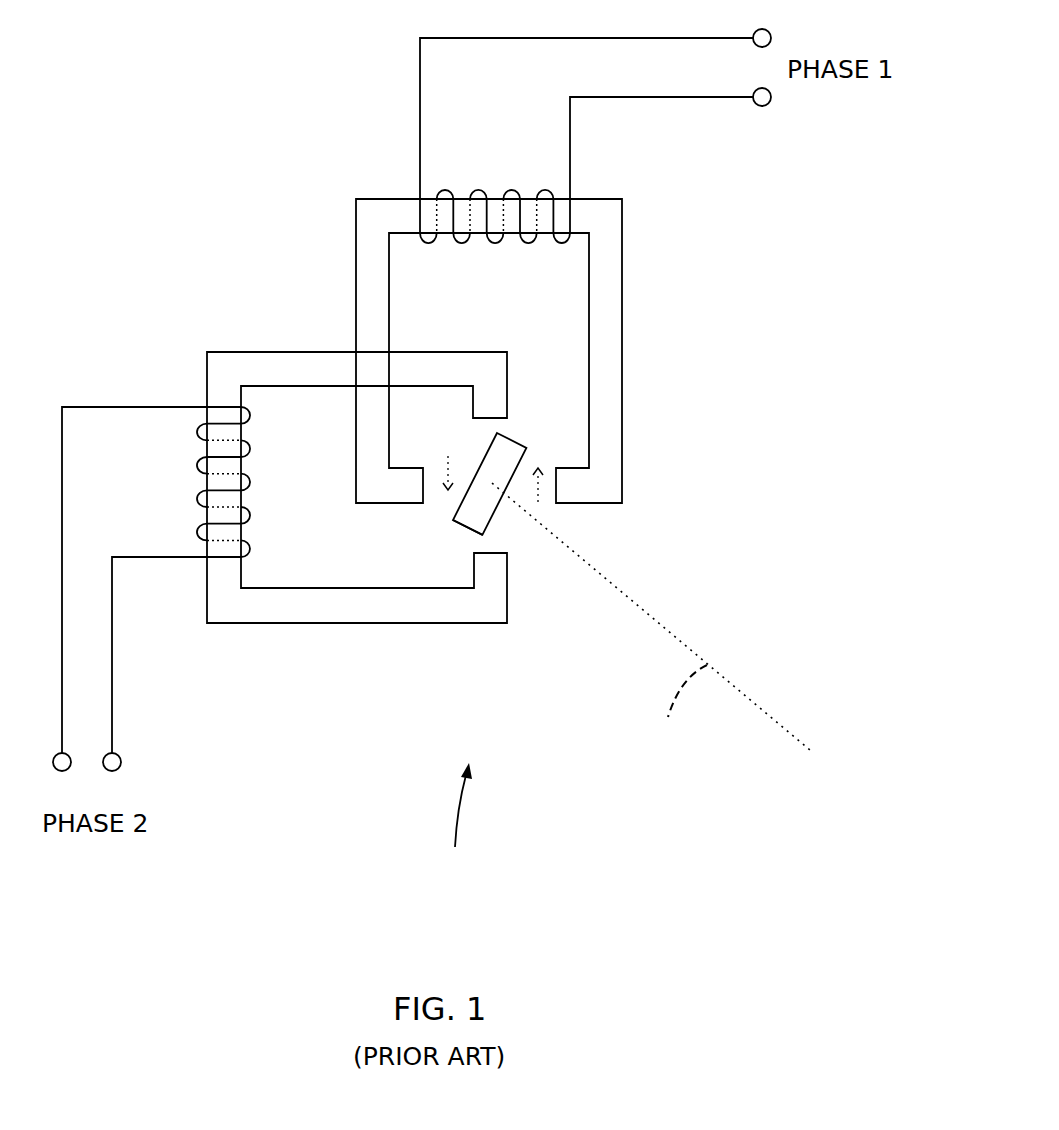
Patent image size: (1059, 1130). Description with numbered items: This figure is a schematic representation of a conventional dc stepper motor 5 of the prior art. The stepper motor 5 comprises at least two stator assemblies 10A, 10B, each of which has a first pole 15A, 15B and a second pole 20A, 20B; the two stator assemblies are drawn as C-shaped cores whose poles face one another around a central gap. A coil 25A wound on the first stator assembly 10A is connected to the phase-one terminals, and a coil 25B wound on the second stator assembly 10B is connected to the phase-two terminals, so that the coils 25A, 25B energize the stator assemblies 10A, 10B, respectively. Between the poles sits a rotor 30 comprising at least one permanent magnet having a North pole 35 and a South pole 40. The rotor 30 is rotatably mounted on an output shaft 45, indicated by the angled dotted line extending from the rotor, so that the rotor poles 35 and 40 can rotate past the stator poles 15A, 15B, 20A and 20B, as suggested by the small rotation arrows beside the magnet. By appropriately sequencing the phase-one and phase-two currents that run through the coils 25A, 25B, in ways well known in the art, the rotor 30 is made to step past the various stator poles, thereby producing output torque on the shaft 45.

The dc stepper motor 5 is at (460, 823).
The stator assembly 10A is at (630, 342).
The stator assembly 10B is at (380, 632).
The first pole 15A is at (573, 488).
The first pole 15B is at (497, 570).
The second pole 20A is at (413, 488).
The second pole 20B is at (490, 408).
The coil 25A is at (495, 243).
The coil 25B is at (245, 513).
The rotor 30 is at (530, 461).
The North pole 35 is at (470, 528).
The South pole 40 is at (495, 436).
The output shaft 45 is at (651, 616).